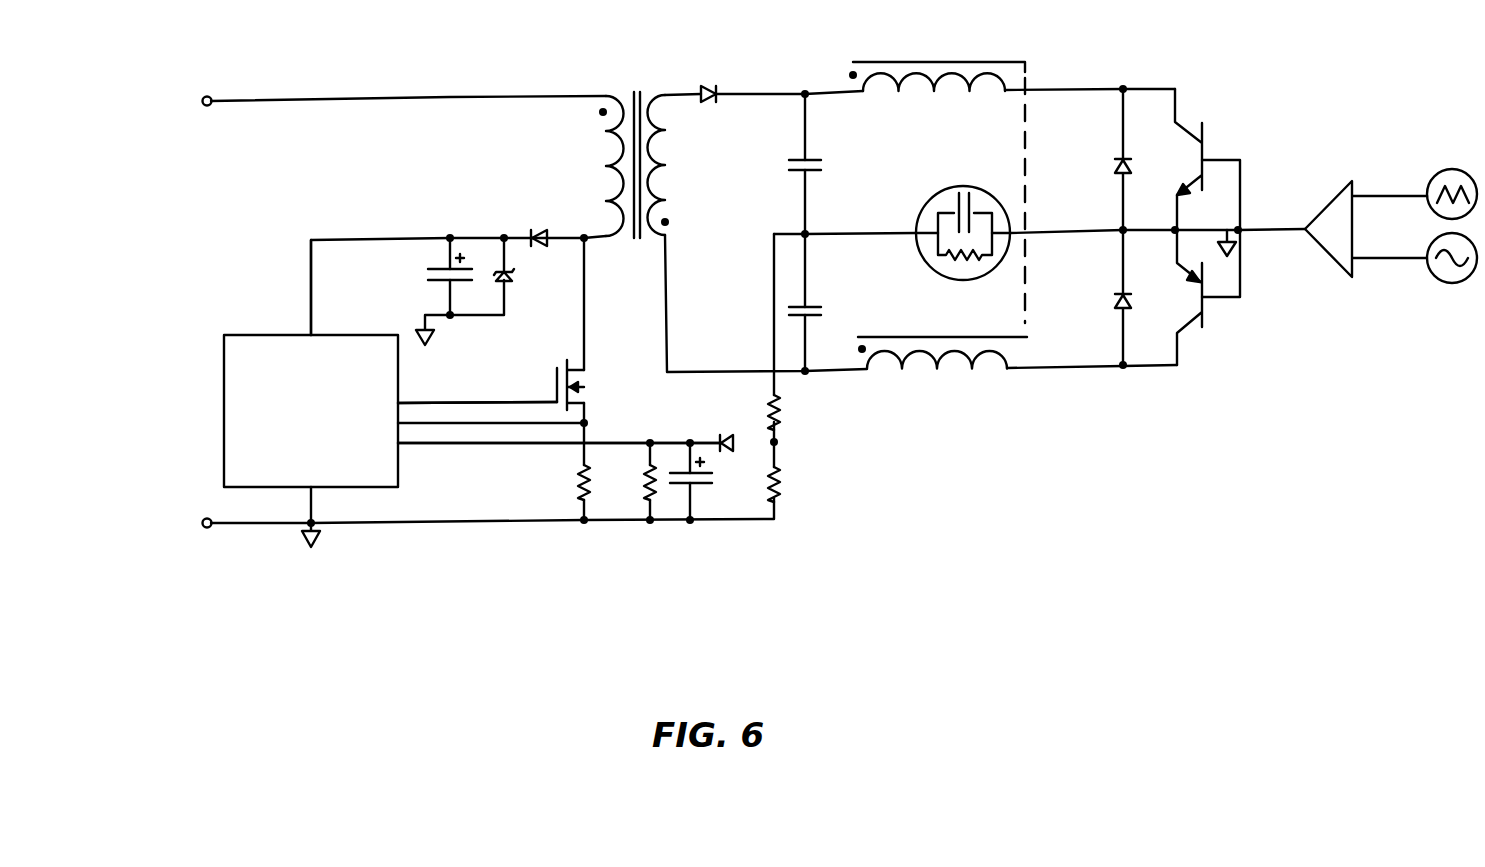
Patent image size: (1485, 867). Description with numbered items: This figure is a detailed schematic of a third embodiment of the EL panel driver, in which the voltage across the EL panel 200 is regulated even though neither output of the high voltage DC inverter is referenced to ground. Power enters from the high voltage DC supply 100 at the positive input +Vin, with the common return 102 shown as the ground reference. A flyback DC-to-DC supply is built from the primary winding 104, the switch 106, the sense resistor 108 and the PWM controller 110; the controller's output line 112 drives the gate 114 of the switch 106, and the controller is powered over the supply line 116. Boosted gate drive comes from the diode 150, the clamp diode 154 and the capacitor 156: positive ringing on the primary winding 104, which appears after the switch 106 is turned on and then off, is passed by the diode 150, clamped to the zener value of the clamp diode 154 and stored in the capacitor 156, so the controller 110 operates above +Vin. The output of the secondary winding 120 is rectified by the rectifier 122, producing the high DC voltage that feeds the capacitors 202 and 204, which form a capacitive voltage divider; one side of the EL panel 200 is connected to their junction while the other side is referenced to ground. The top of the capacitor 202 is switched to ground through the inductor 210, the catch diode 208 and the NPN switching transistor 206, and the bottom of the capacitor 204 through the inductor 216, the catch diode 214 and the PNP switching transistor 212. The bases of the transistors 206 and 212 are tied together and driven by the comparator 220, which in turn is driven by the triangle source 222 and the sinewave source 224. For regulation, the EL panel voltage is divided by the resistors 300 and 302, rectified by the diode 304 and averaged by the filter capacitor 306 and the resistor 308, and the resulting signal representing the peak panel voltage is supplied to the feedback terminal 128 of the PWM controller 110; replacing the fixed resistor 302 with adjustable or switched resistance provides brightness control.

The High Voltage DC supply 100 is at (201, 97).
The common terminal (Com) 102 is at (195, 520).
The primary winding 104 is at (612, 90).
The switch 106 is at (592, 378).
The sense resistor 108 is at (572, 490).
The controller 110 is at (225, 348).
The gate drive line 112 is at (502, 413).
The gate of switching transistor 114 is at (546, 392).
The controller supply line 116 is at (307, 283).
The secondary winding 120 is at (675, 160).
The rectifier 122 is at (708, 80).
The feedback terminal 128 is at (507, 452).
The diode 150 is at (551, 220).
The clamp diode 154 is at (499, 262).
The capacitor 156 is at (446, 262).
The EL panel 200 is at (927, 182).
The capacitor 202 is at (790, 157).
The capacitor 204 is at (824, 300).
The NPN switching transistor 206 is at (1210, 118).
The diode 208 is at (1112, 150).
The inductor 210 is at (862, 60).
The PNP switching transistor 212 is at (1212, 325).
The diode 214 is at (1105, 305).
The inductor 216 is at (955, 375).
The comparator 220 is at (1328, 188).
The triangle source 222 is at (1440, 170).
The sinewave source 224 is at (1440, 283).
The resistor 300 is at (792, 412).
The resistor 302 is at (795, 488).
The diode 304 is at (732, 458).
The filter capacitor 306 is at (704, 495).
The resistor 308 is at (655, 493).